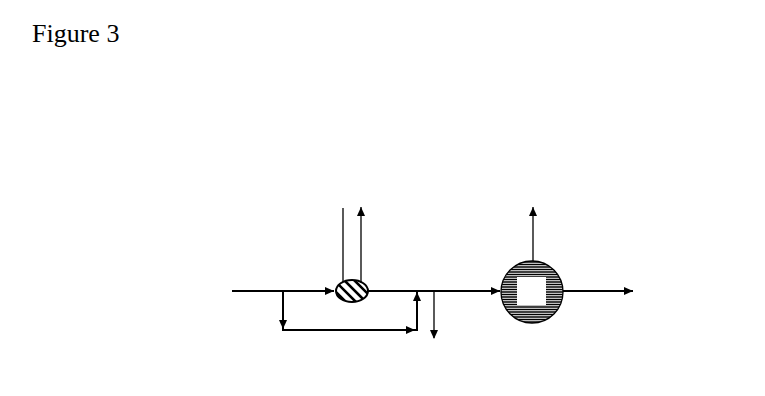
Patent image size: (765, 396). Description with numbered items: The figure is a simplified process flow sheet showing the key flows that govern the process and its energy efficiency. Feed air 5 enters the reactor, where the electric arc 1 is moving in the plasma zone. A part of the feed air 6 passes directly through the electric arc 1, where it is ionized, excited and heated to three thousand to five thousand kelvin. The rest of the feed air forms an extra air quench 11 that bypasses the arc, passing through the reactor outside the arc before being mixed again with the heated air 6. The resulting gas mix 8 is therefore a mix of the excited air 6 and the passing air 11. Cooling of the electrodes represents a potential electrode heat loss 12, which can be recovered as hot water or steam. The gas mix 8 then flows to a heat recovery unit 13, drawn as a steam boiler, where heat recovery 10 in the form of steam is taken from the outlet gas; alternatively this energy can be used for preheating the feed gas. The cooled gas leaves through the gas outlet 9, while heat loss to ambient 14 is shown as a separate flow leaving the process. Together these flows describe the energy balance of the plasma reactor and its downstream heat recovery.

The electric arc 1 is at (348, 290).
The feed air 5 is at (283, 284).
The feed air going through the electric arc 6 is at (392, 282).
The gas mix 8 is at (458, 284).
The gas outlet 9 is at (598, 284).
The heat recovery 10 is at (535, 224).
The extra air quench 11 is at (350, 312).
The electrode heat loss 12 is at (354, 237).
The heat recovery unit 13 is at (532, 292).
The heat loss to ambient 14 is at (433, 328).